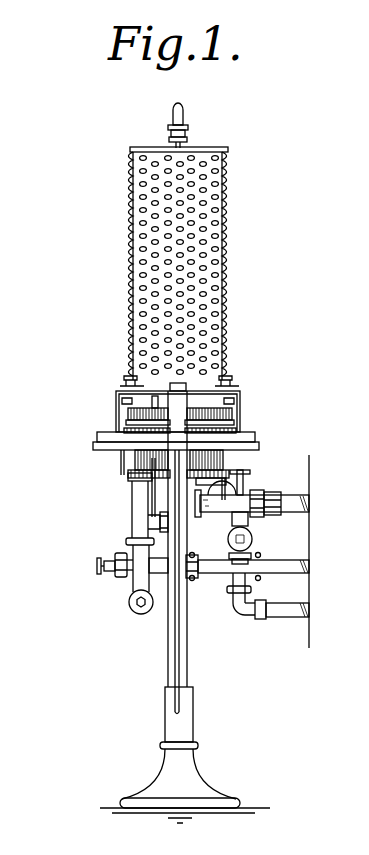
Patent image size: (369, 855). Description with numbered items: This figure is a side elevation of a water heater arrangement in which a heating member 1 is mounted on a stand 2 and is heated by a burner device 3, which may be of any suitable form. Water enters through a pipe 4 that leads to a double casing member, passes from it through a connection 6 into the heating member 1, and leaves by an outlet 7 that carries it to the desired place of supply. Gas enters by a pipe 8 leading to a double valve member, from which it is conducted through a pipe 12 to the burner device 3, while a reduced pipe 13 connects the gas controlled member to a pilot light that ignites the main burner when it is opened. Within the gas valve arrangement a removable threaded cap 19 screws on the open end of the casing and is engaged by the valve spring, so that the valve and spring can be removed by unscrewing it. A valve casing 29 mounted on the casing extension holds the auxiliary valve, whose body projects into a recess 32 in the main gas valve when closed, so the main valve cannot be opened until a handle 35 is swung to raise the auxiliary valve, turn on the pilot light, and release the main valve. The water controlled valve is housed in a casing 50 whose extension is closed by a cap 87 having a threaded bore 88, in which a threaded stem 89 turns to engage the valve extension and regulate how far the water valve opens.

The heating member 1 is at (230, 393).
The stand 2 is at (168, 638).
The burner device 3 is at (233, 416).
The pipe 4 is at (283, 543).
The connection 6 is at (138, 523).
The outlet 7 is at (215, 492).
The pipe 8 is at (247, 579).
The pipe 12 is at (138, 500).
The reduced pipe 13 is at (262, 491).
The removable threaded cap 19 is at (255, 583).
The valve casing 29 is at (256, 531).
The recess 32 is at (160, 575).
The handle 35 is at (232, 538).
The casing 50 is at (132, 593).
The cap 87 is at (127, 545).
The threaded bore 88 is at (114, 556).
The threaded stem 89 is at (98, 571).